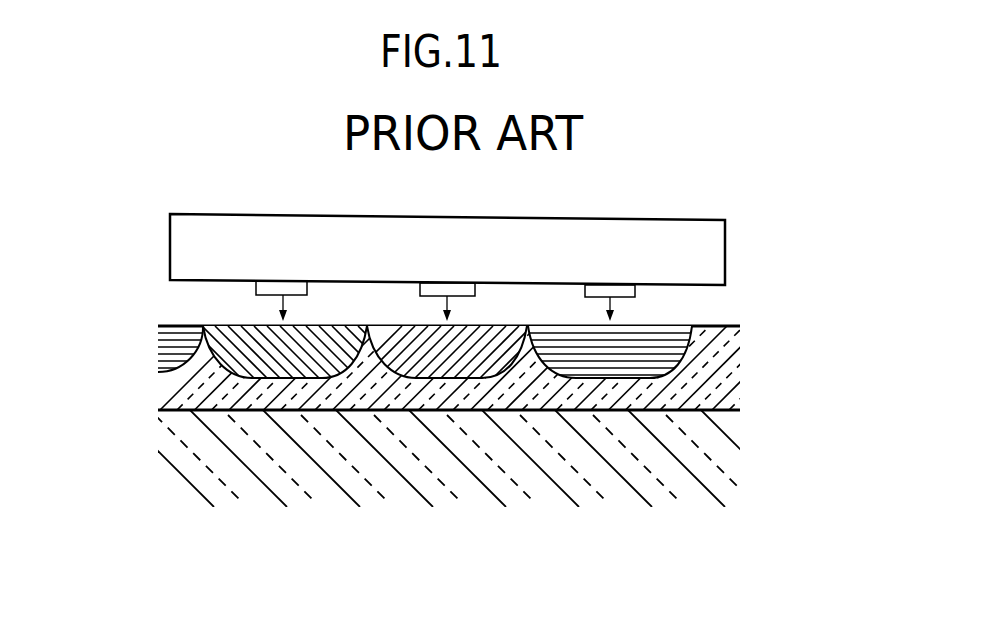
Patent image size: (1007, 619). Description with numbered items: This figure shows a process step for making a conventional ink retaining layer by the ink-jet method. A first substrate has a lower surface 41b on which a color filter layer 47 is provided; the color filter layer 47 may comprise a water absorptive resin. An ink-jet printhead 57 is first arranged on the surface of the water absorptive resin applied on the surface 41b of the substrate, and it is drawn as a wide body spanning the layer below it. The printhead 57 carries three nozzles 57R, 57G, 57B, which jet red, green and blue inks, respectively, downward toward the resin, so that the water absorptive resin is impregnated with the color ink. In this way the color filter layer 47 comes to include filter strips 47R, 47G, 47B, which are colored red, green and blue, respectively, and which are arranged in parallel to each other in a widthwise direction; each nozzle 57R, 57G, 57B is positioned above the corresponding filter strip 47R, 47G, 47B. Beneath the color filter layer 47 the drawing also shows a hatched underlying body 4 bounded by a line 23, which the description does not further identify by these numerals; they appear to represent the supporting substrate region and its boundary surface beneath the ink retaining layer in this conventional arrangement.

The ink-jet printhead 57 is at (726, 232).
The nozzle 57R is at (308, 288).
The nozzle 57G is at (475, 289).
The nozzle 57B is at (635, 290).
The color filter layer 47 is at (146, 380).
The filter strip 47R is at (290, 363).
The filter strip 47G is at (455, 368).
The filter strip 47B is at (608, 368).
The lower surface 41b is at (256, 398).
The substrate surface 23 is at (717, 395).
The substrate 4 is at (187, 468).